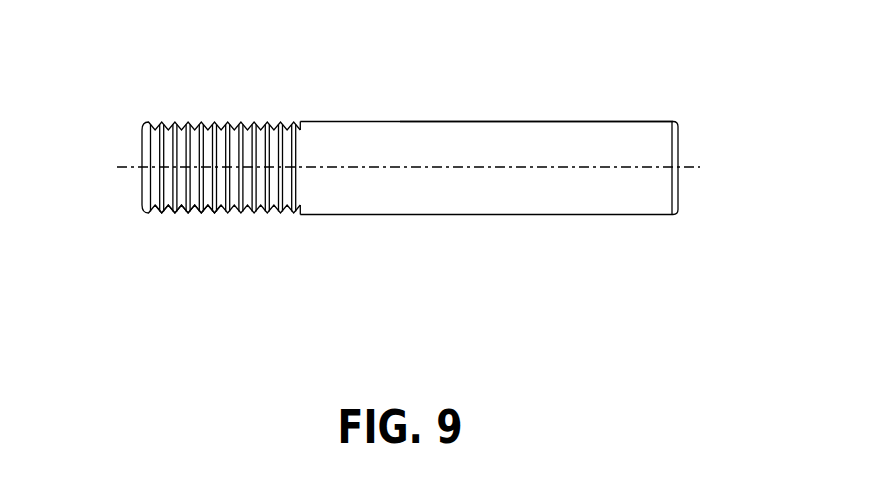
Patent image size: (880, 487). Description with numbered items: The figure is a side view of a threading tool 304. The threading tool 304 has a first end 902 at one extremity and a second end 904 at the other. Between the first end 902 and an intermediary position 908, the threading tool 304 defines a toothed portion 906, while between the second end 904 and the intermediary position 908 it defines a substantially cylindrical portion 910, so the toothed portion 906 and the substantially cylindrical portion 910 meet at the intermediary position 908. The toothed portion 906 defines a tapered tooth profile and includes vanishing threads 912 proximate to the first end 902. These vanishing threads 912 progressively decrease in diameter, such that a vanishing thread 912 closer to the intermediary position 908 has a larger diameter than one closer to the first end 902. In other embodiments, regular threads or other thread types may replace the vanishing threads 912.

The threading tool 304 is at (610, 48).
The first end 902 is at (140, 148).
The second end 904 is at (683, 137).
The toothed portion 906 is at (227, 123).
The intermediary position 908 is at (300, 122).
The substantially cylindrical portion 910 is at (602, 121).
The vanishing threads 912 is at (162, 214).